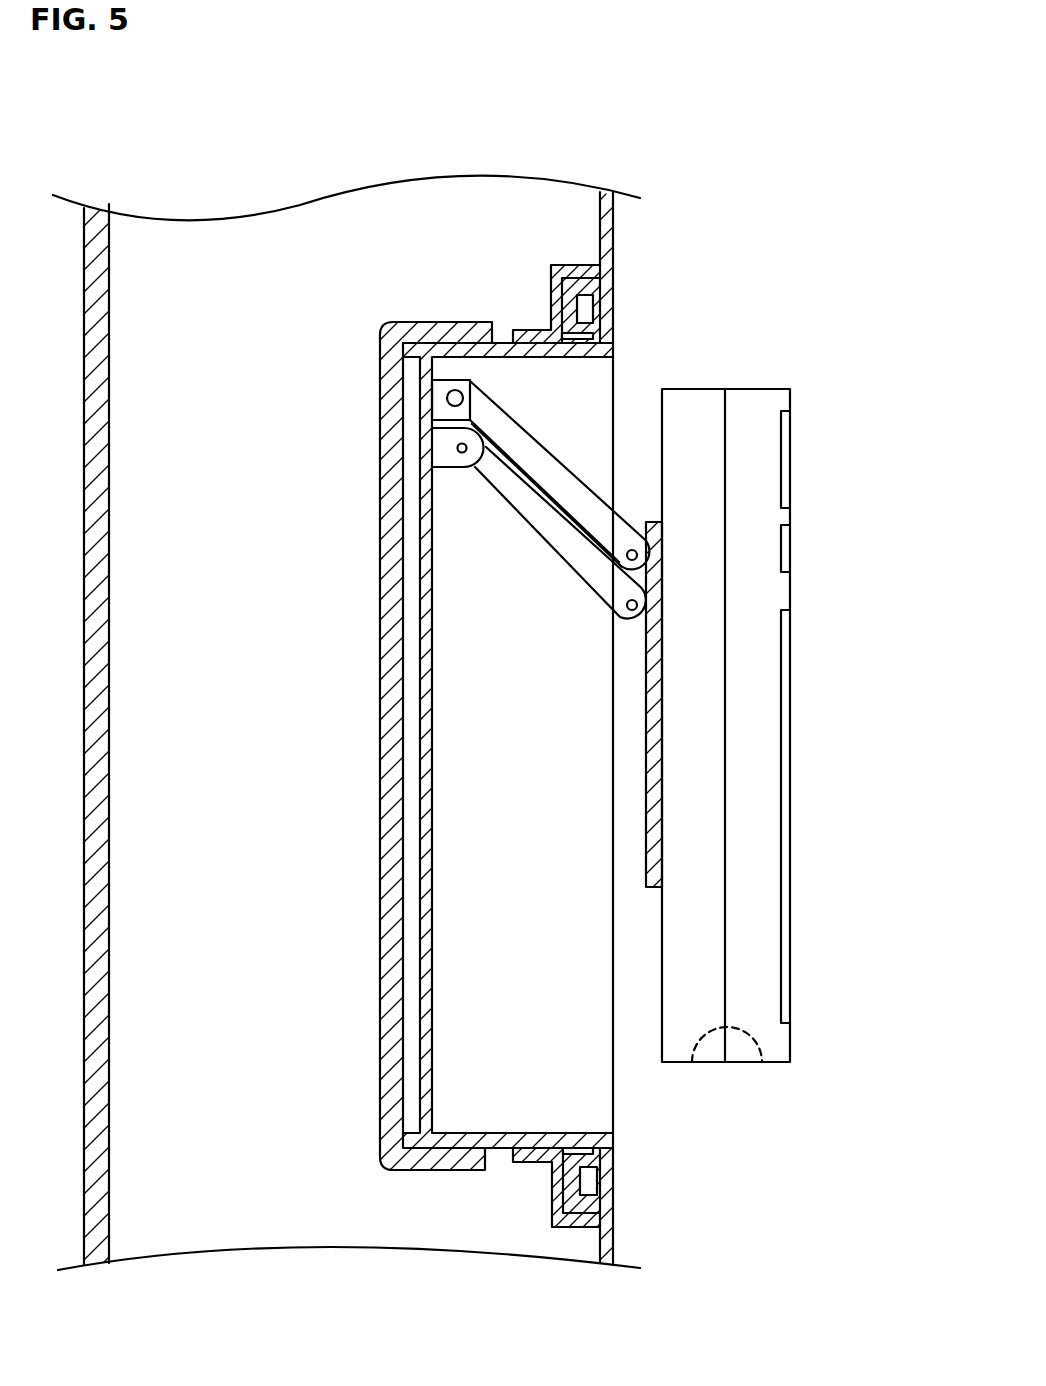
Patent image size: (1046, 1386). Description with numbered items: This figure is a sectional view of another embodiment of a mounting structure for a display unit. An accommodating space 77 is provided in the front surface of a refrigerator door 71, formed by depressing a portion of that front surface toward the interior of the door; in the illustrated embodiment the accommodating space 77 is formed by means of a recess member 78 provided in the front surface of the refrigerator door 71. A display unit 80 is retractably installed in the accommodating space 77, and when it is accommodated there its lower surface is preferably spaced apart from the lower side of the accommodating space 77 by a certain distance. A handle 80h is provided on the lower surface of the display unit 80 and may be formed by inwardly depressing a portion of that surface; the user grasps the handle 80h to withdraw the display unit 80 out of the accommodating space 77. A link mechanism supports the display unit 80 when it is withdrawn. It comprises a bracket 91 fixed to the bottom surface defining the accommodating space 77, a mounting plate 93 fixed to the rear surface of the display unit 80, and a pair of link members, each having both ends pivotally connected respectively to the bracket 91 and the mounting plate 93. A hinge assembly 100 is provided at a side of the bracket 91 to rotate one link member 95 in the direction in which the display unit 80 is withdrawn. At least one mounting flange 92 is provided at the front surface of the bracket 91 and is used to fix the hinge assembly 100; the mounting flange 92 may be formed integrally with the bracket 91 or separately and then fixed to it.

The refrigerator door 71 is at (621, 237).
The accommodating space 77 is at (538, 746).
The recess member 78 is at (540, 1132).
The display unit 80 is at (803, 427).
The handle 80h is at (755, 1043).
The bracket 91 is at (433, 1013).
The mounting flange 92 is at (472, 412).
The mounting plate 93 is at (646, 522).
The link member 95 is at (573, 478).
The hinge assembly 100 is at (435, 380).